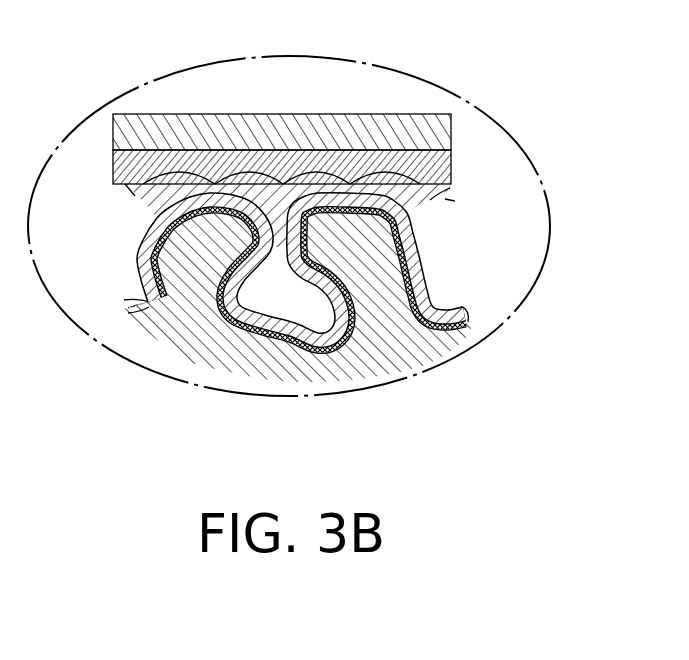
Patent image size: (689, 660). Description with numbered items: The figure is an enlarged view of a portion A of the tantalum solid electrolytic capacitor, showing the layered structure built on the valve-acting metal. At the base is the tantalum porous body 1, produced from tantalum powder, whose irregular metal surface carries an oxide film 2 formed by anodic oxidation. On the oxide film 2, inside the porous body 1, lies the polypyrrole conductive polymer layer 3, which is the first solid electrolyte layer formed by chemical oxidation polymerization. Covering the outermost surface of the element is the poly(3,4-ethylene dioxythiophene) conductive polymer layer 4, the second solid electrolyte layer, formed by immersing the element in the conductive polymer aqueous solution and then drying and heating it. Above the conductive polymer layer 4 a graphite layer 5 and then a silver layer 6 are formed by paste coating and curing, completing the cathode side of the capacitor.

The tantalum porous body 1 is at (212, 330).
The oxide film 2 is at (317, 367).
The polypyrrole conductive polymer layer 3 is at (252, 303).
The poly(3,4-ethylene dioxythiophene) conductive polymer layer 4 is at (293, 182).
The graphite layer 5 is at (154, 152).
The silver layer 6 is at (219, 120).
The portion A is at (480, 110).